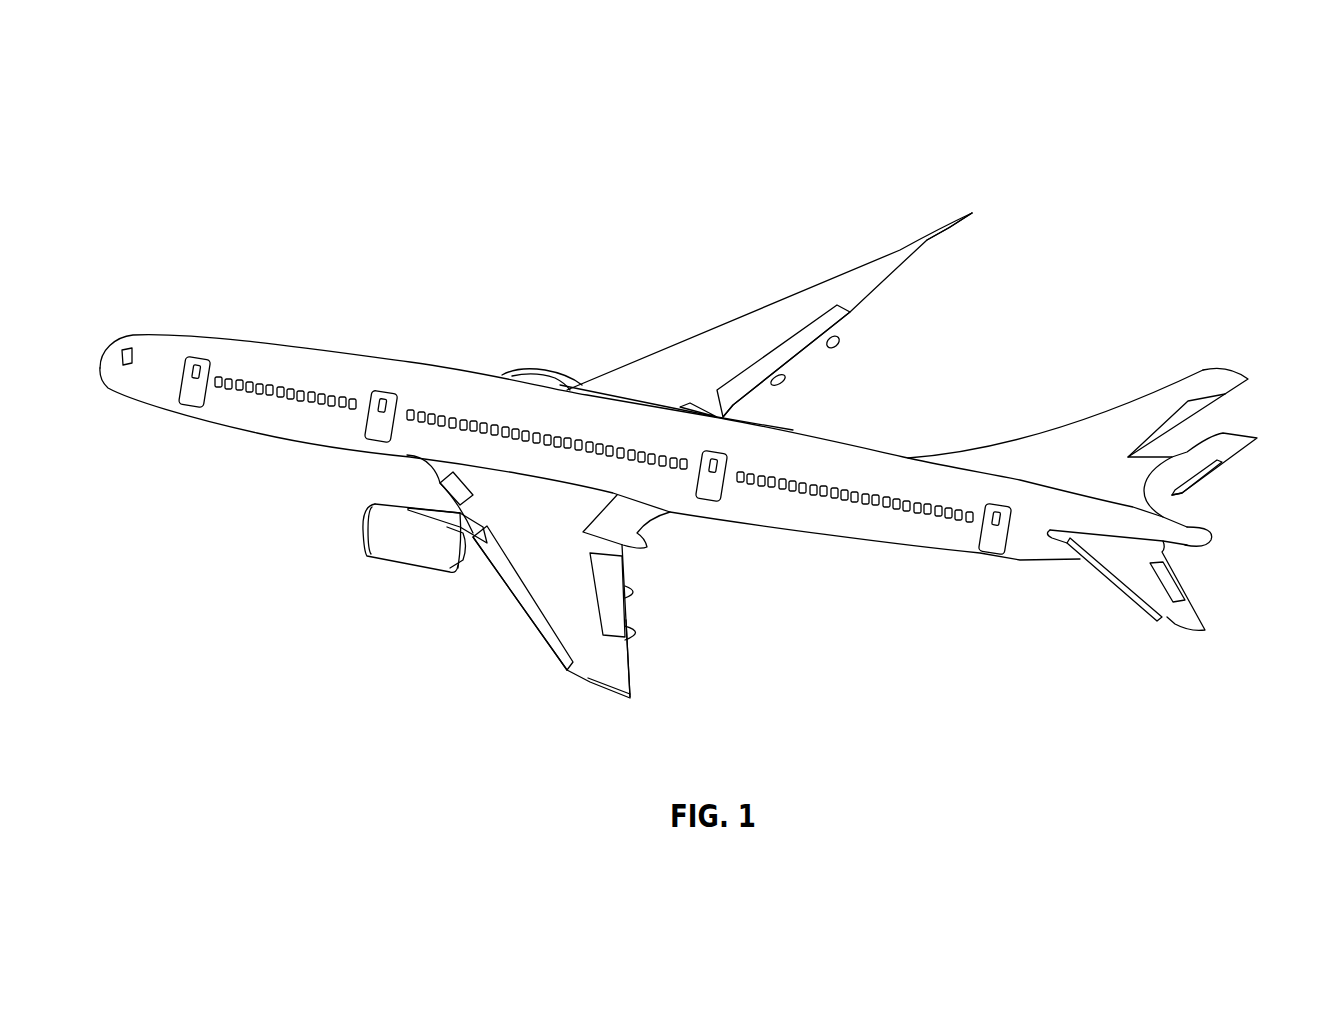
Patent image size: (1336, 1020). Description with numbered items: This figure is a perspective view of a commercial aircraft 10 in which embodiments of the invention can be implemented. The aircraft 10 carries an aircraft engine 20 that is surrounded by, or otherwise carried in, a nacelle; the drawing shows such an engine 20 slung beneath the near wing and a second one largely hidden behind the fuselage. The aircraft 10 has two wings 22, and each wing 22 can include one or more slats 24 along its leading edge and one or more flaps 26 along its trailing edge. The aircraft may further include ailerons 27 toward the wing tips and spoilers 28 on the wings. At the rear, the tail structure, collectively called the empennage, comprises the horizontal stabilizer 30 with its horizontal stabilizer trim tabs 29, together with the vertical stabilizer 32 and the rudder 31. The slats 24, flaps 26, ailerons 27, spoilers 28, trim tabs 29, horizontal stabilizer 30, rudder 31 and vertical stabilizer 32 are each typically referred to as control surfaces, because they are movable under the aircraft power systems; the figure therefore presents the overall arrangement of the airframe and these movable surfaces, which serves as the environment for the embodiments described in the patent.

The commercial aircraft 10 is at (1128, 157).
The aircraft engine 20 is at (527, 378).
The wings 22 is at (782, 300).
The slats 24 is at (540, 623).
The flaps 26 is at (808, 346).
The ailerons 27 is at (912, 283).
The spoilers 28 is at (843, 262).
The horizontal stabilizer trim tabs 29 is at (1108, 592).
The horizontal stabilizer 30 is at (1190, 625).
The rudder 31 is at (1185, 405).
The vertical stabilizer 32 is at (1220, 480).